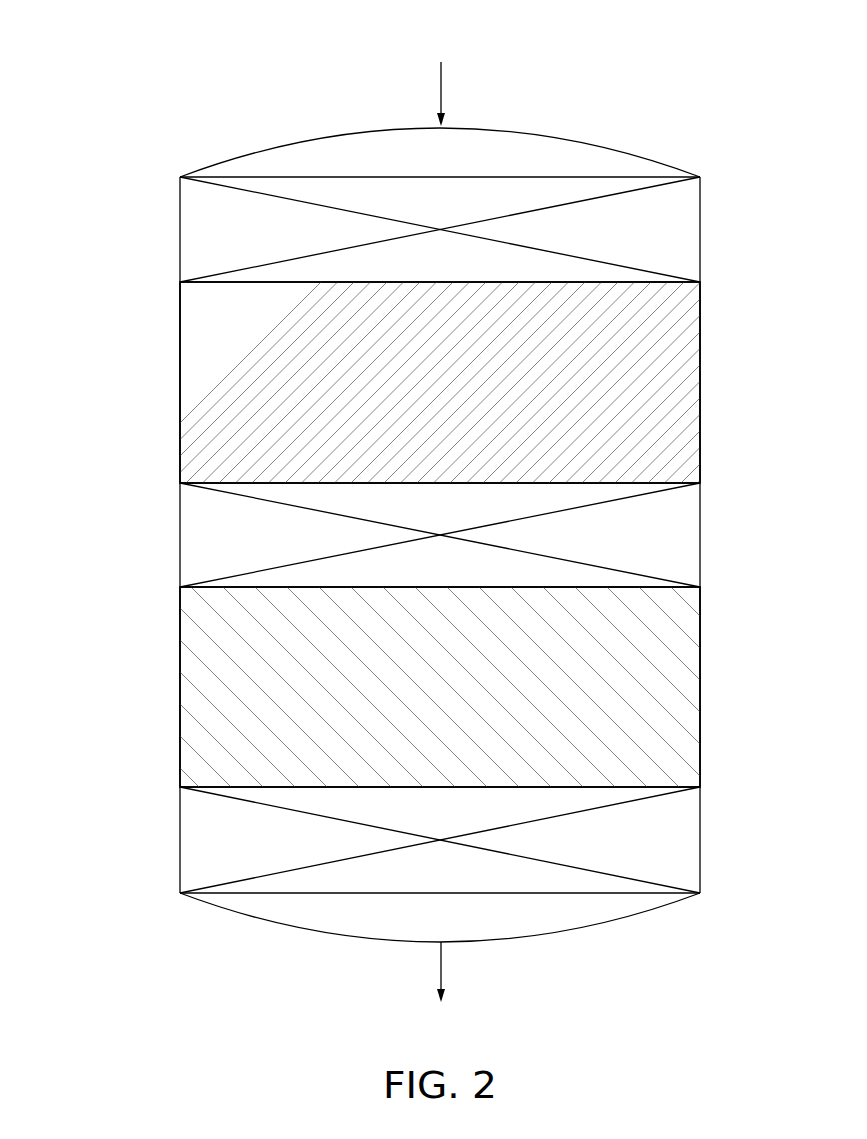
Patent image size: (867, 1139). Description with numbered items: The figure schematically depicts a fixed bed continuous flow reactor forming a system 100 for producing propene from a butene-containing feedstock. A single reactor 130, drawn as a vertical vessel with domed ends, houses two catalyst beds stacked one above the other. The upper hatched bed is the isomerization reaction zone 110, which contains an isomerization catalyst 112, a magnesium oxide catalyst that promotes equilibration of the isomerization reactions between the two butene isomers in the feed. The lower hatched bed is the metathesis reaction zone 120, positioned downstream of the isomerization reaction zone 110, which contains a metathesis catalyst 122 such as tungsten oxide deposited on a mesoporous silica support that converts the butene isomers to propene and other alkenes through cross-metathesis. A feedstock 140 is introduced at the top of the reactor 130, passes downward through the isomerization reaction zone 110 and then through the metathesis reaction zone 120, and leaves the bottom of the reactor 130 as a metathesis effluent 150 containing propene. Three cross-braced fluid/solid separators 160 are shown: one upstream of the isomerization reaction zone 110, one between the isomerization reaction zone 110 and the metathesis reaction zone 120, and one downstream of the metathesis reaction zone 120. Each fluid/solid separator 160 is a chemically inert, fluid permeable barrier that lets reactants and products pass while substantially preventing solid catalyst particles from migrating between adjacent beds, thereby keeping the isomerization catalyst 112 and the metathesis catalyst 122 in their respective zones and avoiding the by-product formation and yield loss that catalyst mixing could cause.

The system 100 is at (134, 88).
The isomerization reaction zone 110 is at (190, 363).
The isomerization catalyst 112 is at (692, 366).
The metathesis reaction zone 120 is at (190, 724).
The metathesis catalyst 122 is at (692, 726).
The reactor 130 is at (323, 137).
The feedstock 140 is at (441, 92).
The metathesis effluent 150 is at (441, 978).
The fluid/solid separator 160 is at (190, 232).